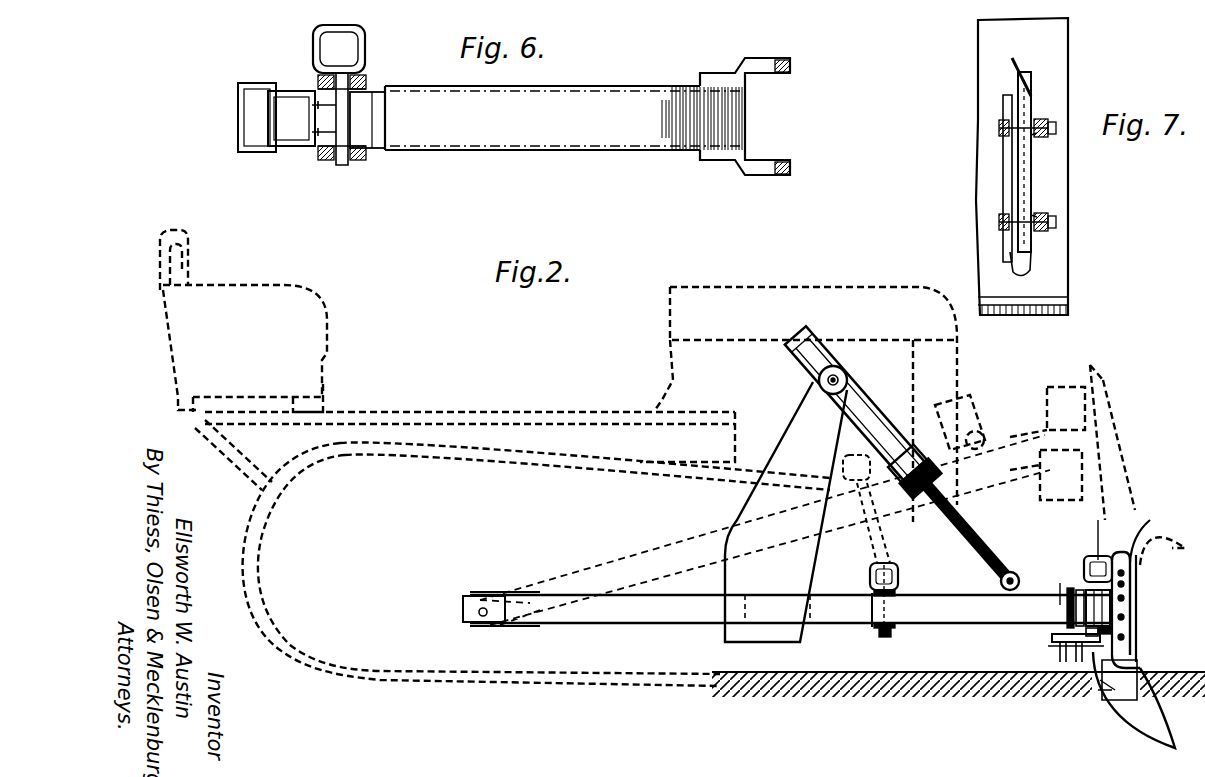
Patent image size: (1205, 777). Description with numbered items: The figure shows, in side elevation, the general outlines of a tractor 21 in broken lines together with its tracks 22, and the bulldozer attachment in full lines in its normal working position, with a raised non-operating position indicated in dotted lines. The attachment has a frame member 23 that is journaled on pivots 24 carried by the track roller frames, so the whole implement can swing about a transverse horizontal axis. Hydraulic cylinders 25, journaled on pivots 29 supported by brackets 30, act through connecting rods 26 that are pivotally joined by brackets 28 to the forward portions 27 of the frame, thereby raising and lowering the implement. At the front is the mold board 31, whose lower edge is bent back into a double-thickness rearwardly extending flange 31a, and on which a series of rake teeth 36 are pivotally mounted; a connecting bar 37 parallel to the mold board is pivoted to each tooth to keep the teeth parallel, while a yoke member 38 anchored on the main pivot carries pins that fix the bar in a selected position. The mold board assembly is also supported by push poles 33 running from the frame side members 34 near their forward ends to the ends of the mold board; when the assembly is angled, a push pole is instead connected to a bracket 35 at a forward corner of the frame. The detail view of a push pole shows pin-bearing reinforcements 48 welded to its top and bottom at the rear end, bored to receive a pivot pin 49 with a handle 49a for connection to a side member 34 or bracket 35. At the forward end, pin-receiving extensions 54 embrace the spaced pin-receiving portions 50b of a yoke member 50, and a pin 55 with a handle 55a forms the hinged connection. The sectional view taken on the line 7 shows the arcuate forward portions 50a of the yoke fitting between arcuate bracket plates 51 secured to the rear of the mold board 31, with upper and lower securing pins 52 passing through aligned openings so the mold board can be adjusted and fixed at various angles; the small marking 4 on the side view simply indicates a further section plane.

In FIG. 2, the section line 4 is at (1130, 601).
In FIG. 2, the section line 7- 7 is at (1090, 530).
In FIG. 2, the tractor 21 is at (790, 290).
In FIG. 2, the tracks 22 is at (512, 460).
In FIG. 2, the frame member 23 is at (596, 590).
In FIG. 2, the pivots 24 is at (468, 612).
In FIG. 2, the hydraulic cylinders 25 is at (868, 393).
In FIG. 2, the connecting rods 26 is at (1000, 533).
In FIG. 6, the forward portions of the frame 27 is at (290, 152).
In FIG. 2, the brackets 28 is at (996, 562).
In FIG. 2, the pivots 29 is at (818, 383).
In FIG. 2, the brackets 30 is at (790, 440).
In FIG. 7, the mold board 31 is at (990, 145).
In FIG. 2, the mold board 31 is at (1137, 585).
In FIG. 7, the rearwardly extending flange 31a is at (1030, 315).
In FIG. 2, the rearwardly extending flange 31a is at (1140, 664).
In FIG. 6, the push poles 33 is at (507, 150).
In FIG. 2, the push poles 33 is at (945, 623).
In FIG. 2, the frame side members 34 is at (688, 623).
In FIG. 6, the bracket 35 is at (363, 118).
In FIG. 2, the rake teeth 36 is at (1150, 712).
In FIG. 2, the connecting bar 37 is at (1048, 650).
In FIG. 2, the yoke member 38 is at (1052, 637).
In FIG. 6, the pin-bearing reinforcements 48 is at (352, 192).
In FIG. 2, the pin-bearing reinforcements 48 is at (910, 632).
In FIG. 6, the pivot pin 49 is at (340, 165).
In FIG. 2, the pivot pin 49 is at (886, 637).
In FIG. 6, the handle 49a is at (365, 42).
In FIG. 2, the handle 49a is at (870, 575).
In FIG. 2, the yoke members 50 is at (1110, 612).
In FIG. 7, the forward portions of the yoke 50a is at (1010, 198).
In FIG. 7, the pin-receiving portions 50b is at (1038, 135).
In FIG. 7, the bracket plates 51 is at (1022, 272).
In FIG. 2, the bracket plates 51 is at (1112, 628).
In FIG. 7, the securing pins 52 is at (1074, 222).
In FIG. 2, the securing pins 52 is at (1125, 618).
In FIG. 6, the pin-receiving extensions 54 is at (815, 168).
In FIG. 7, the pin-receiving extensions 54 is at (995, 228).
In FIG. 2, the pin-receiving extensions 54 is at (1070, 588).
In FIG. 7, the pin 55 is at (1020, 182).
In FIG. 2, the pin 55 is at (1058, 590).
In FIG. 7, the handle 55a is at (1018, 72).
In FIG. 2, the handle 55a is at (1085, 565).